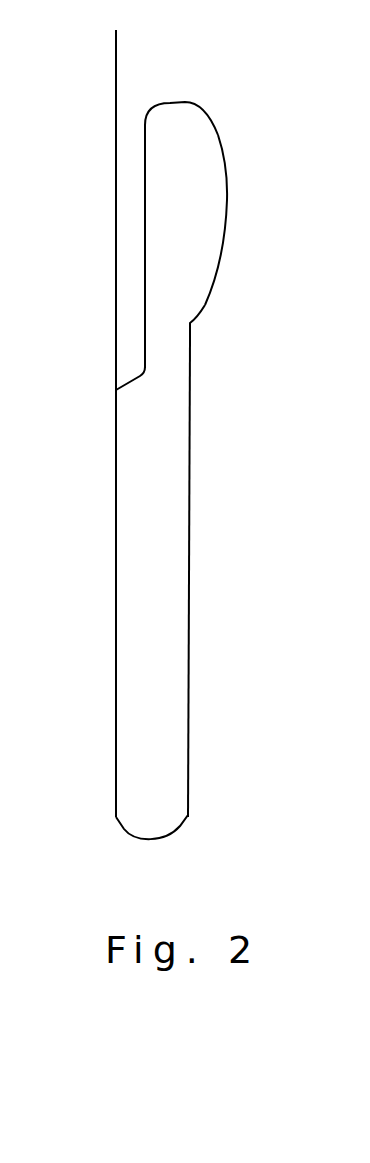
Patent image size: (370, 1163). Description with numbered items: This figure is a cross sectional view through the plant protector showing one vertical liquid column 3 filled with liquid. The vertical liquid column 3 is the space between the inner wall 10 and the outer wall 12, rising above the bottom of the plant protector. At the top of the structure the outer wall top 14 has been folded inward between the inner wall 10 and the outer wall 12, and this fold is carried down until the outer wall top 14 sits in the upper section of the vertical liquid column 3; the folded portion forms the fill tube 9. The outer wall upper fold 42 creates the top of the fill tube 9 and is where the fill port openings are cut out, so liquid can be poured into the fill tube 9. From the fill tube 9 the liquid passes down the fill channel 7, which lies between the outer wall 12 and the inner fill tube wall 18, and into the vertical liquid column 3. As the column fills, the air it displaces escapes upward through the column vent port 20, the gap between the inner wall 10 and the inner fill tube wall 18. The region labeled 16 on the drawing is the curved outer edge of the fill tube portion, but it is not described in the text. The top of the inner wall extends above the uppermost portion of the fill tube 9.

The vertical liquid column 3 is at (157, 542).
The fill channel 7 is at (167, 345).
The fill tube 9 is at (190, 249).
The inner wall 10 is at (116, 535).
The outer wall 12 is at (192, 520).
The outer wall top 14 is at (116, 390).
The curved outer edge of head 16 is at (227, 208).
The inner fill tube wall 18 is at (143, 205).
The column vent port 20 is at (133, 342).
The outer wall upper fold 42 is at (188, 103).